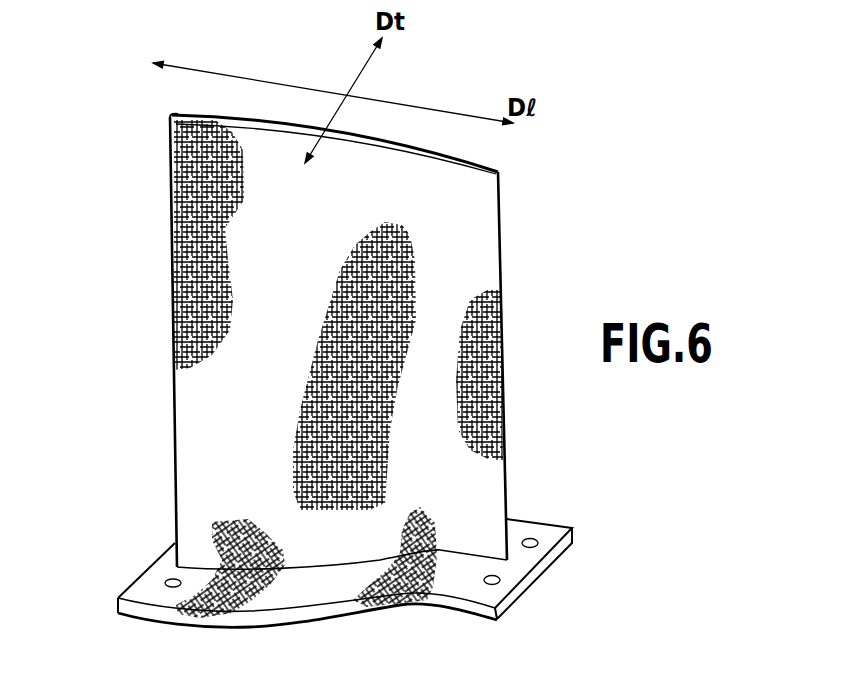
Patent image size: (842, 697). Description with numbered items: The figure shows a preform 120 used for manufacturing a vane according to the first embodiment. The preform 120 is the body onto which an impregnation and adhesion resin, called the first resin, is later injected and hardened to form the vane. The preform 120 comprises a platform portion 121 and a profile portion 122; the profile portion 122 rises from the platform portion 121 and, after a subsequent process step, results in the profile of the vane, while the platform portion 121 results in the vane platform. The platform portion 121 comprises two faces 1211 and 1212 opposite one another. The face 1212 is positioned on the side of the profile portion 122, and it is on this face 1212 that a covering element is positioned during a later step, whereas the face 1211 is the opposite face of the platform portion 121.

The preform 120 is at (158, 263).
The platform portion 121 is at (145, 573).
The profile portion 122 is at (478, 226).
The face 1211 is at (327, 619).
The face 1212 is at (240, 612).